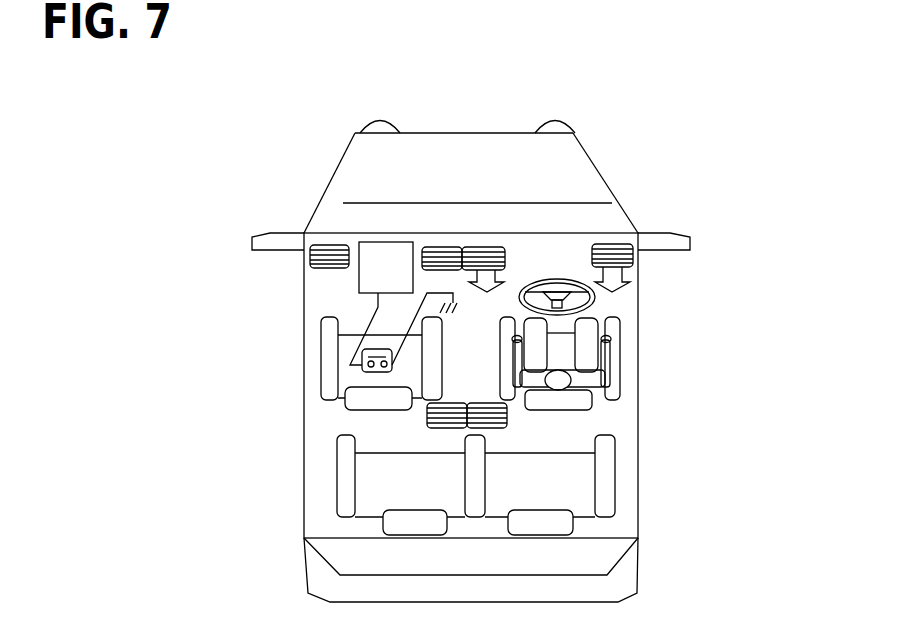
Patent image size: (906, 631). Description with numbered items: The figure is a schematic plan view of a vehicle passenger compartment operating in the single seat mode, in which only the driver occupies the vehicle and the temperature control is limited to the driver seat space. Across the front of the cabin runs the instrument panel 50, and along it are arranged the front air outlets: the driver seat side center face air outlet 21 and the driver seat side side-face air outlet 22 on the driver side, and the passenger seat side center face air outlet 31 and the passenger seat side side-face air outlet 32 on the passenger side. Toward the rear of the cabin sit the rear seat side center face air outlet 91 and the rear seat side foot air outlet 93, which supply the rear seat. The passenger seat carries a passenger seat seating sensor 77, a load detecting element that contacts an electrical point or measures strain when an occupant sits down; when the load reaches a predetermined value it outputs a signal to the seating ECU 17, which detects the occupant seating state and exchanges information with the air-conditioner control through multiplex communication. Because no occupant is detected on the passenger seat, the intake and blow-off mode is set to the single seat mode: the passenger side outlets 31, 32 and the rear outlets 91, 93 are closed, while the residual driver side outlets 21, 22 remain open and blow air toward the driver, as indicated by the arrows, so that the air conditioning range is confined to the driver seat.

The seating ECU 17 is at (383, 242).
The driver seat side center face air outlet 21 is at (482, 247).
The driver seat side side-face air outlet 22 is at (633, 258).
The passenger seat side center face air outlet 31 is at (443, 247).
The passenger seat side side-face air outlet 32 is at (310, 258).
The instrument panel 50 is at (582, 225).
The passenger seat seating sensor 77 is at (362, 368).
The rear seat side center face air outlet 91 is at (447, 432).
The rear seat side foot air outlet 93 is at (507, 422).